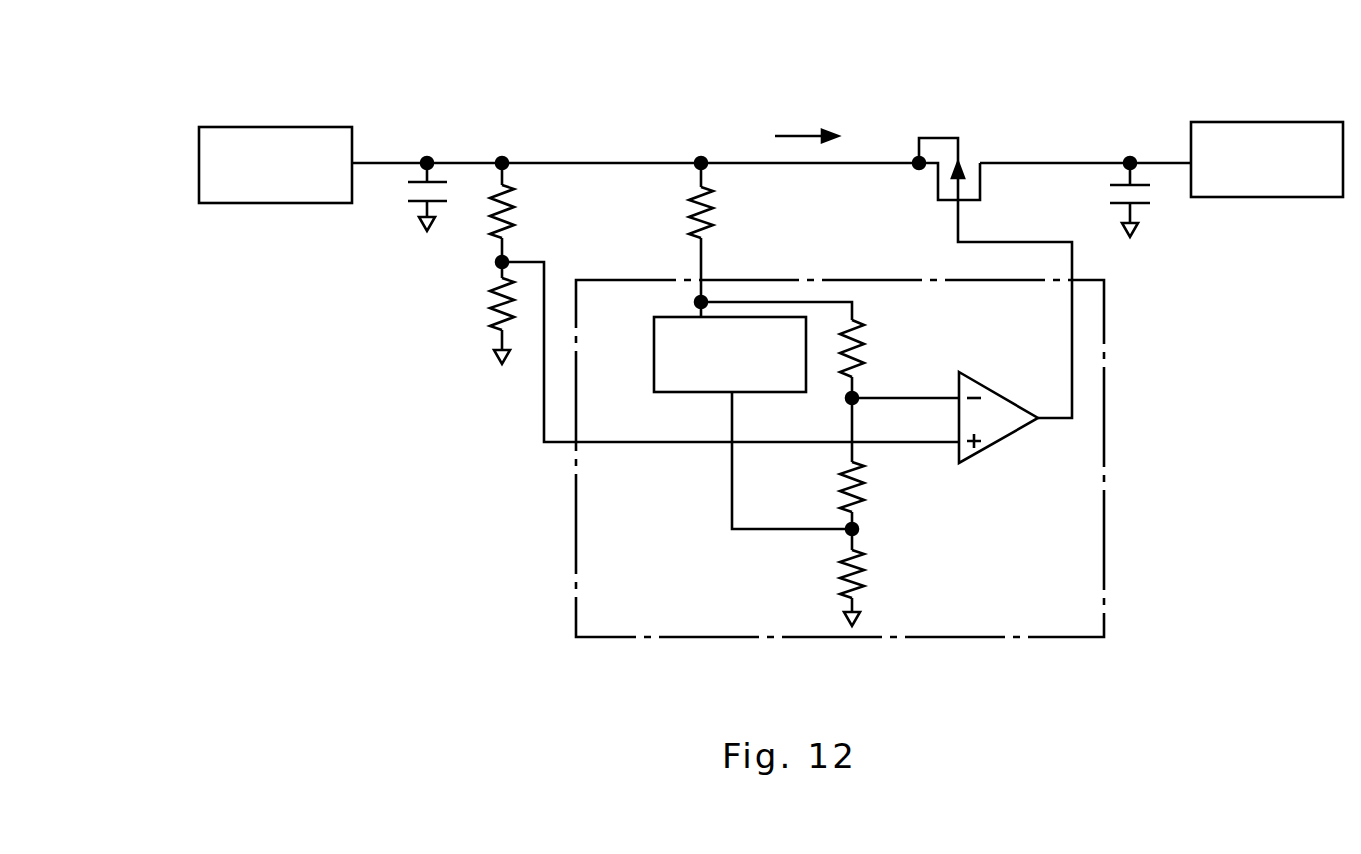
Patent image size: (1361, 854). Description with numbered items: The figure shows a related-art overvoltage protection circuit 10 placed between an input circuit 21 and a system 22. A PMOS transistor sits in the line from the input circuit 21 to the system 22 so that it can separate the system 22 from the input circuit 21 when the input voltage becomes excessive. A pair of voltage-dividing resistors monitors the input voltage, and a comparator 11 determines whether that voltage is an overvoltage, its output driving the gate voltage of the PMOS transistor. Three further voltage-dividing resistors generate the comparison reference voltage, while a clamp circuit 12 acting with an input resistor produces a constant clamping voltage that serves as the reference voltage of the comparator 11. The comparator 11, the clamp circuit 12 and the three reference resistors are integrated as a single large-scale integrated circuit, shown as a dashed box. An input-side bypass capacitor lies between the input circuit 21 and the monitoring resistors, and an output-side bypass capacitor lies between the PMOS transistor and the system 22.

The overvoltage protection circuit 10 is at (771, 321).
The comparator 11 is at (1003, 442).
The clamp circuit 12 is at (654, 366).
The input circuit 21 is at (308, 127).
The system 22 is at (1255, 122).